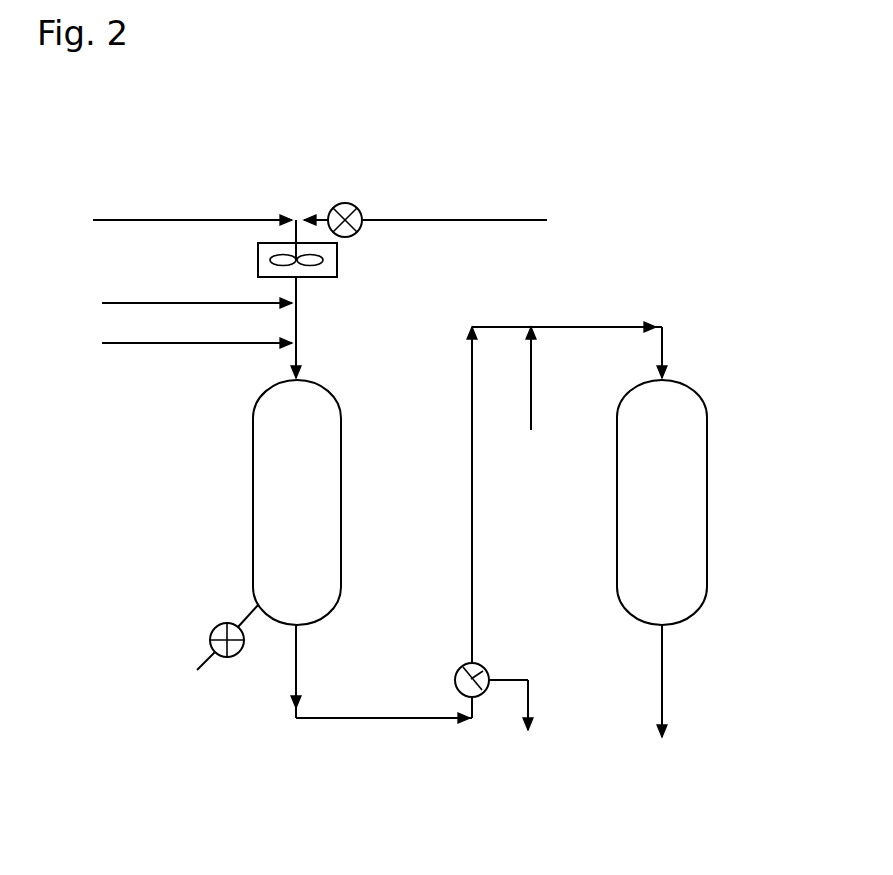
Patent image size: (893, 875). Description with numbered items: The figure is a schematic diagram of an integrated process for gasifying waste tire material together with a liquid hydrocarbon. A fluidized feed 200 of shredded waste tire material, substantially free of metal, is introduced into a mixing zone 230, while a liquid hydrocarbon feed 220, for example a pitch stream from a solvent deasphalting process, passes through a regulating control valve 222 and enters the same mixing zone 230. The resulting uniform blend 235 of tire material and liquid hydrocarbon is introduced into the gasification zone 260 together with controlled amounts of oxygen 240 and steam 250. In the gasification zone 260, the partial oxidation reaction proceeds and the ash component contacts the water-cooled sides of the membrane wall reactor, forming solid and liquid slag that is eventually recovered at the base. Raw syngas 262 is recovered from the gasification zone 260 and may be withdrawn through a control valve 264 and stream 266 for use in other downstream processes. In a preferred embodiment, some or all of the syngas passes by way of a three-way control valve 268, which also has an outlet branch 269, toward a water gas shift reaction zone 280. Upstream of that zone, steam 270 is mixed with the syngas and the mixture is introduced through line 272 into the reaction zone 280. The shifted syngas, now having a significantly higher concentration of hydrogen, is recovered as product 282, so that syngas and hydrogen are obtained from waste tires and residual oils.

The fluidized feed of shredded waste tire material 200 is at (193, 220).
The liquid hydrocarbon feed 220 is at (465, 220).
The regulating control valve 222 is at (343, 204).
The mixing zone 230 is at (337, 250).
The blend stream 235 is at (297, 290).
The oxygen 240 is at (158, 303).
The steam 250 is at (172, 343).
The gasification zone 260 is at (321, 506).
The raw syngas 262 is at (296, 670).
The control valve 264 is at (241, 653).
The syngas withdrawal stream 266 is at (206, 661).
The three-way control valve 268 is at (482, 663).
The purge line 269 is at (528, 697).
The steam 270 is at (531, 388).
The line 272 is at (662, 340).
The water gas shift reaction zone 280 is at (689, 508).
The product 282 is at (662, 668).